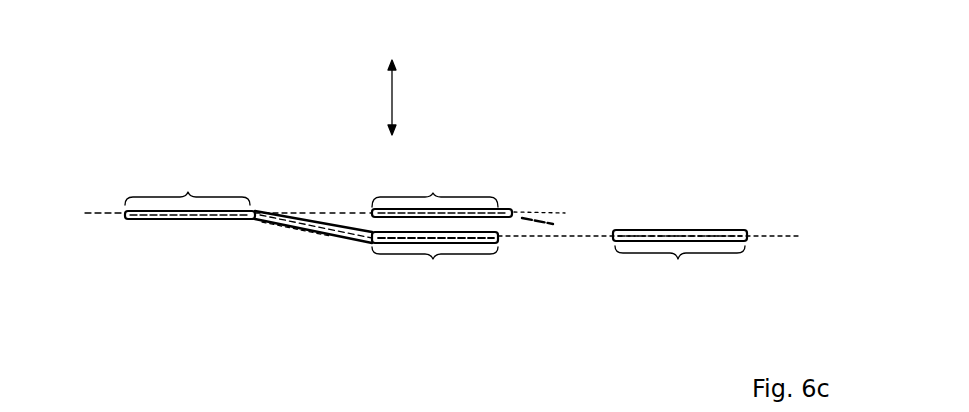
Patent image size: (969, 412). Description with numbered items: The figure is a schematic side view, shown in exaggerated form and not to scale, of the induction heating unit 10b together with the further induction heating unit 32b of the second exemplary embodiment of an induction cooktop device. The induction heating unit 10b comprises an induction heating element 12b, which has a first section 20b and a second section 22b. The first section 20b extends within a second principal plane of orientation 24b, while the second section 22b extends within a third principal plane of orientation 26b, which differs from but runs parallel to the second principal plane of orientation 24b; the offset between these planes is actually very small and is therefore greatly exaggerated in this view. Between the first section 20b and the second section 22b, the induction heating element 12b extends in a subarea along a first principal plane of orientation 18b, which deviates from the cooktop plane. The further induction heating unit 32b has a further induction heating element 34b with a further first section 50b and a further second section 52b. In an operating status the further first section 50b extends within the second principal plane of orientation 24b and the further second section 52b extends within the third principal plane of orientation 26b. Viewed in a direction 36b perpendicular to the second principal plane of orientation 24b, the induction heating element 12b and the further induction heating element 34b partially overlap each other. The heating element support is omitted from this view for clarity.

The induction heating unit 10b is at (680, 192).
The induction heating element 12b is at (596, 212).
The first principal plane of orientation 18b is at (573, 208).
The first section 20b is at (432, 192).
The second section 22b is at (680, 260).
The second principal plane of orientation 24b is at (332, 208).
The third principal plane of orientation 26b is at (550, 246).
The further induction heating unit 32b is at (238, 158).
The further induction heating element 34b is at (284, 226).
The direction 36b is at (395, 90).
The further first section 50b is at (187, 190).
The further second section 52b is at (432, 262).